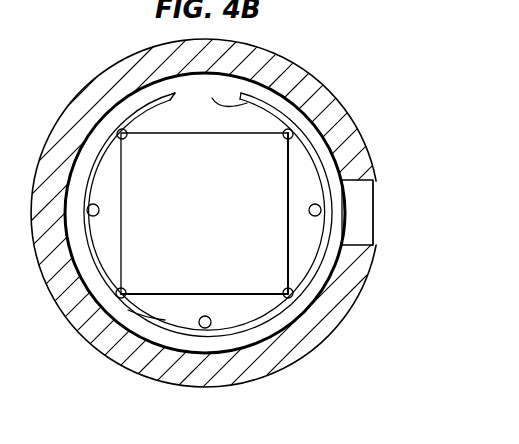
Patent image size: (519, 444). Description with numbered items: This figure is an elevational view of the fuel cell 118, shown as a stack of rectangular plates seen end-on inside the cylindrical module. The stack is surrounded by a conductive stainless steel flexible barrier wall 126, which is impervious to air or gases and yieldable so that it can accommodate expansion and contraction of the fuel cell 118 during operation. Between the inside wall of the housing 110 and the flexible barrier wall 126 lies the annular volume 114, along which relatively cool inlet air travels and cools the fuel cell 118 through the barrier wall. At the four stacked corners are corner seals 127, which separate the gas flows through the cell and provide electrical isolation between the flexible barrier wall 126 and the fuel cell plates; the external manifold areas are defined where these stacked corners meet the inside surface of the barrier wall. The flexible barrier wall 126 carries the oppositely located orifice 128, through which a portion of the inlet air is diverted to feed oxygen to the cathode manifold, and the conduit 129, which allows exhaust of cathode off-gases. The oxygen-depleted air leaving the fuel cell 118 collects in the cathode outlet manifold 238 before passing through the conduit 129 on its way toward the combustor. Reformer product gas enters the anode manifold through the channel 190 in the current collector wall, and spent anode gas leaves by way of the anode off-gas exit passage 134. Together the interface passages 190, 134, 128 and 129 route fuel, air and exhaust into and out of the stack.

The housing 110 is at (107, 345).
The annular volume 114 is at (323, 152).
The fuel cell 118 is at (215, 219).
The flexible barrier wall 126 is at (145, 102).
The corner seals 127 is at (118, 130).
The orifice 128 is at (262, 50).
The conduit 129 is at (207, 328).
The anode off-gas exit passage 134 is at (376, 226).
The channel 190 is at (95, 204).
The cathode outlet manifold 238 is at (167, 312).